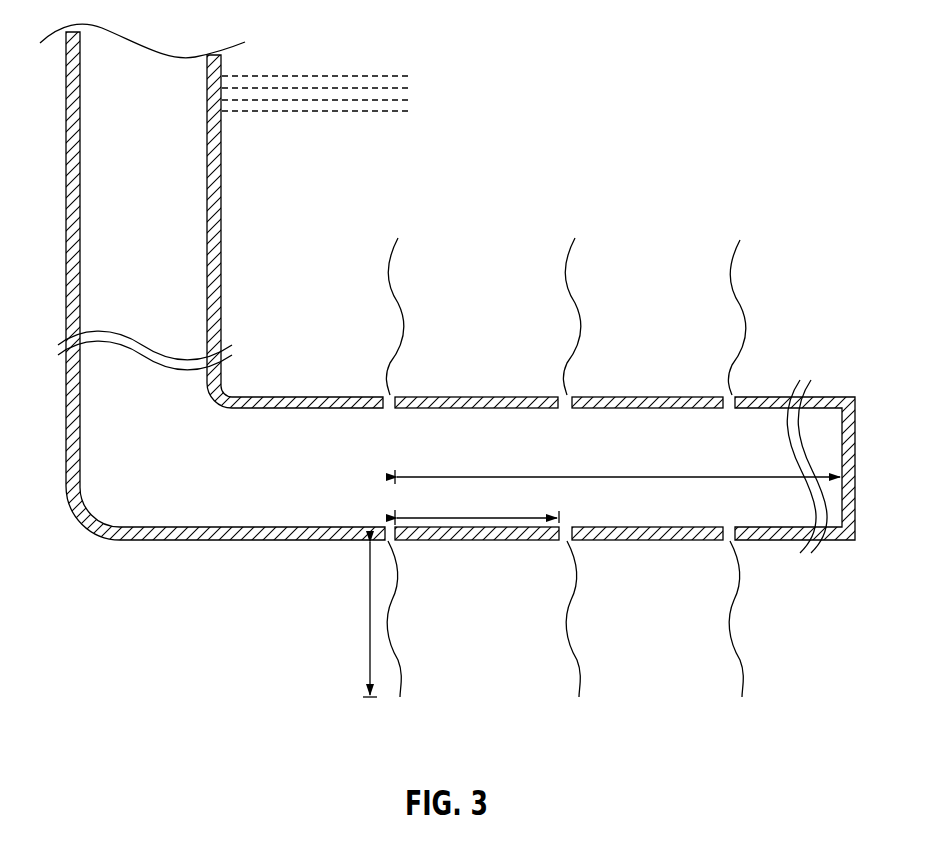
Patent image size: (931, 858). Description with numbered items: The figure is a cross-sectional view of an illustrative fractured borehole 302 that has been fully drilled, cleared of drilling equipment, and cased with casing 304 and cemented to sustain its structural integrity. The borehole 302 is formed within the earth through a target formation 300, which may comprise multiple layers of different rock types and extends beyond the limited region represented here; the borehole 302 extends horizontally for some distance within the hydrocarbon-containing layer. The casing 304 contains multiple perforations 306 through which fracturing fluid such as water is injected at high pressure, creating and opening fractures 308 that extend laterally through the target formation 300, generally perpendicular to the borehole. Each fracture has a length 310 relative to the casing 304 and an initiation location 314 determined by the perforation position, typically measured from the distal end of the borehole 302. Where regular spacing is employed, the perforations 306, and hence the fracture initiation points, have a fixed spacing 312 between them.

The target formation 300 is at (420, 74).
The borehole 302 is at (170, 149).
The casing 304 is at (215, 176).
The perforations 306 is at (387, 410).
The fractures 308 is at (397, 258).
The length 310 is at (369, 630).
The spacing 312 is at (470, 521).
The initiation location 314 is at (745, 478).